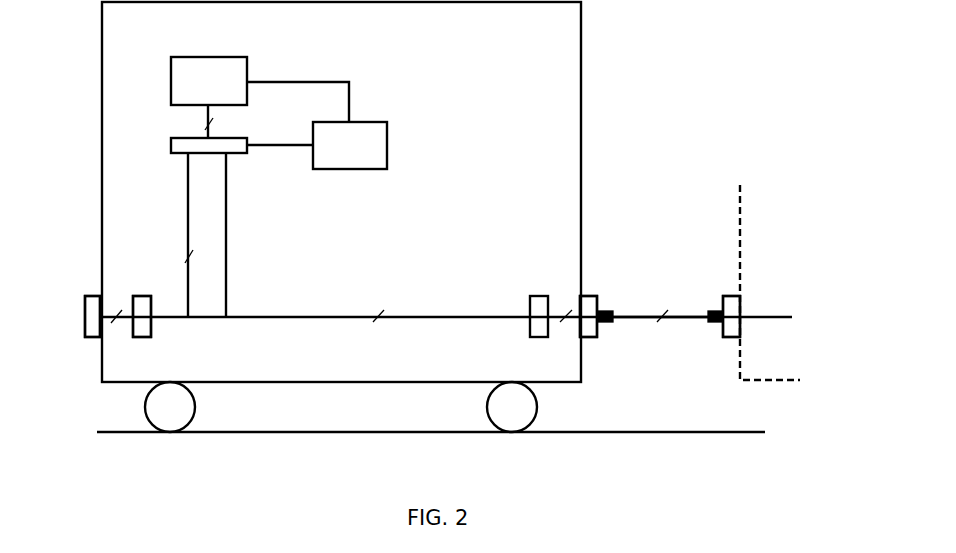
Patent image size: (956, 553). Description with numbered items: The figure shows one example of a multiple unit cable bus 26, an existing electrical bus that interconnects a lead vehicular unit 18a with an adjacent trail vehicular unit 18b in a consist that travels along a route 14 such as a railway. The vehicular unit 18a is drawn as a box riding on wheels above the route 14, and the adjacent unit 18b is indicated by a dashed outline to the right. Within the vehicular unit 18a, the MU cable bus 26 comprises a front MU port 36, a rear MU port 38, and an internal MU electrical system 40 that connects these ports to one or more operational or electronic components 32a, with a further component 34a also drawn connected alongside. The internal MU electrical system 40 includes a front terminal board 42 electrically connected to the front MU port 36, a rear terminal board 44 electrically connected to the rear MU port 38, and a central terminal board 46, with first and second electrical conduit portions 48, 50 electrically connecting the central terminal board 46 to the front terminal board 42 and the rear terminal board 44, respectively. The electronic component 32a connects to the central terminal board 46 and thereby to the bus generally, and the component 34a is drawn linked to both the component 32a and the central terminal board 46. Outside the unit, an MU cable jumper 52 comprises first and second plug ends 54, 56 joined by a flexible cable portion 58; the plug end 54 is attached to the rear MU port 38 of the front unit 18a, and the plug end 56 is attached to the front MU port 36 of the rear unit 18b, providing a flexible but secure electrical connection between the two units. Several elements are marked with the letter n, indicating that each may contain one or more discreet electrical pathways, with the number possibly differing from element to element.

The route 14 is at (661, 430).
The lead vehicular unit 18a is at (581, 55).
The trail vehicular unit 18b is at (742, 205).
The MU cable bus 26 is at (97, 283).
The operational/electronic component 32a is at (171, 78).
The drive unit 34a is at (387, 143).
The front MU port 36 is at (84, 312).
The rear MU port 38 is at (592, 296).
The internal MU electrical system 40 is at (437, 264).
The front terminal board 42 is at (140, 296).
The rear terminal board 44 is at (535, 296).
The central terminal board 46 is at (171, 143).
The first electrical conduit portion 48 is at (188, 227).
The second electrical conduit portion 50 is at (226, 227).
The MU cable jumper 52 is at (669, 274).
The first plug end 54 is at (606, 323).
The second plug end 56 is at (713, 323).
The flexible cable portion 58 is at (638, 317).